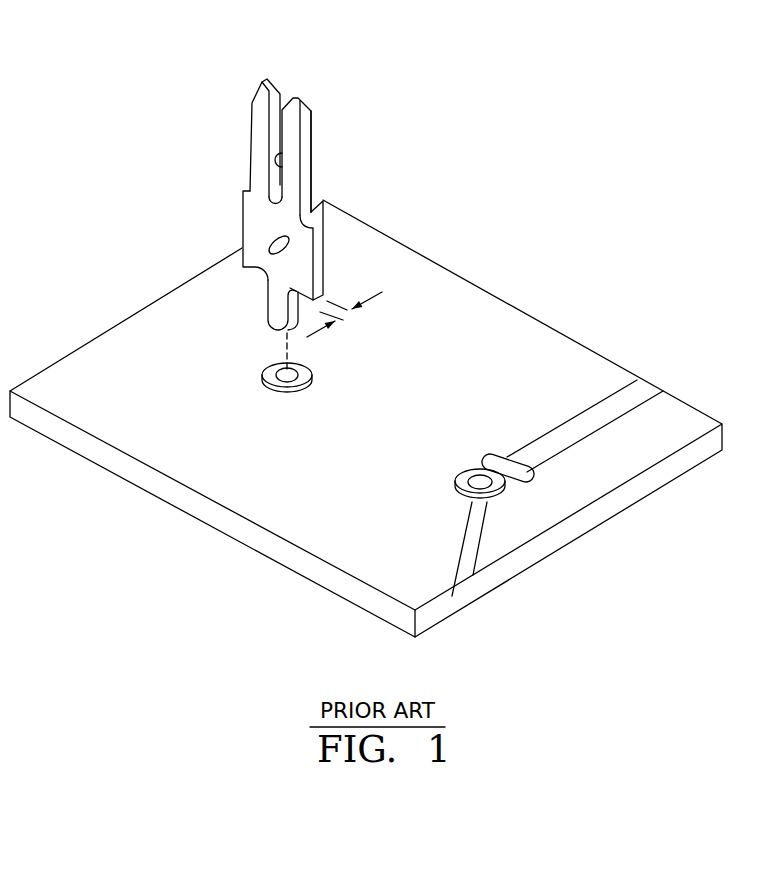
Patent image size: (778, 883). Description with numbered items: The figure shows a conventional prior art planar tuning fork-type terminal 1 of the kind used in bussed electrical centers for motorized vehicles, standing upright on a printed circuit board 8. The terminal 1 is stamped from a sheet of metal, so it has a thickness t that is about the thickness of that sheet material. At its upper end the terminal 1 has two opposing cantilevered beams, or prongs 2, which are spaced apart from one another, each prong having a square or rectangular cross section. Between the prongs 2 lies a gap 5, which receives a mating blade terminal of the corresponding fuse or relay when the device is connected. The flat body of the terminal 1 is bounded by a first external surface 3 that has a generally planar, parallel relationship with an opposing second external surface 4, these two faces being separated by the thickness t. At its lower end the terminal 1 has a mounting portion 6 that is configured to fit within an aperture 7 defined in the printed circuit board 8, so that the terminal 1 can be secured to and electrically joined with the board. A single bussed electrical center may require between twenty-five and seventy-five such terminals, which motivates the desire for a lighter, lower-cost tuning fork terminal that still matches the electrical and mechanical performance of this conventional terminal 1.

The planar tuning fork-type terminal 1 is at (242, 210).
The prongs 2 is at (272, 87).
The first external surface 3 is at (265, 222).
The second external surface 4 is at (312, 183).
The gap 5 is at (278, 164).
The mounting portion 6 is at (277, 297).
The aperture 7 is at (290, 377).
The printed circuit board 8 is at (131, 473).
The thickness t is at (343, 318).